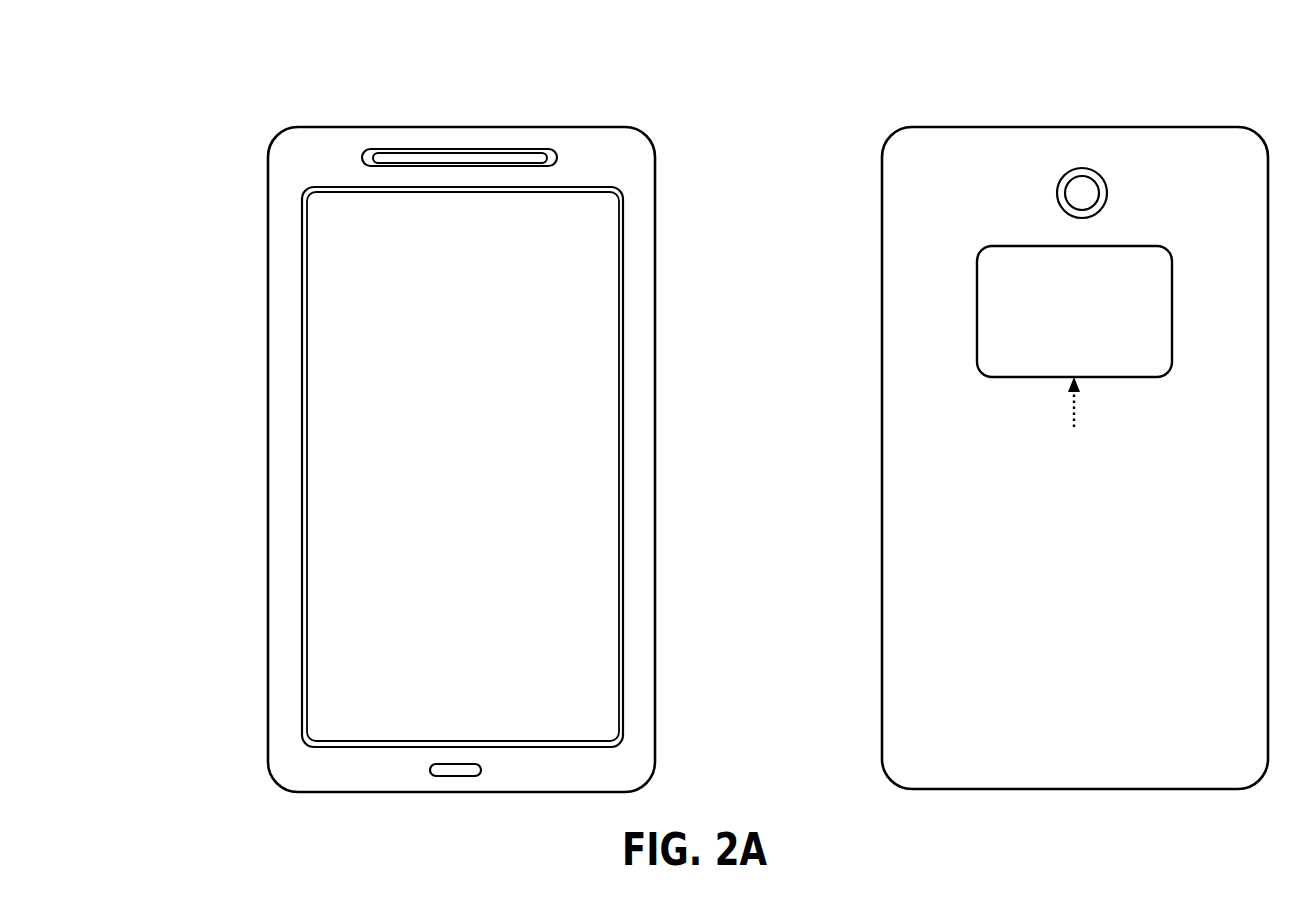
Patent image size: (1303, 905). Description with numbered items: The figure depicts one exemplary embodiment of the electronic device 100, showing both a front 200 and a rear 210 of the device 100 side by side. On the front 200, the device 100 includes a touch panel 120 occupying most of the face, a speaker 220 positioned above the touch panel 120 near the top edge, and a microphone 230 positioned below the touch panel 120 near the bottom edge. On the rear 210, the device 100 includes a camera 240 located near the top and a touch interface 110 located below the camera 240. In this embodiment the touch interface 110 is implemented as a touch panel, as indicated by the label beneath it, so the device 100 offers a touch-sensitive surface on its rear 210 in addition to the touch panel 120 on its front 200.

The device 100 is at (211, 100).
The front 200 is at (461, 108).
The rear 210 is at (1086, 110).
The speaker 220 is at (571, 160).
The touch panel 120 is at (603, 466).
The microphone 230 is at (498, 772).
The camera 240 is at (1040, 193).
The touch interface 110 is at (966, 313).